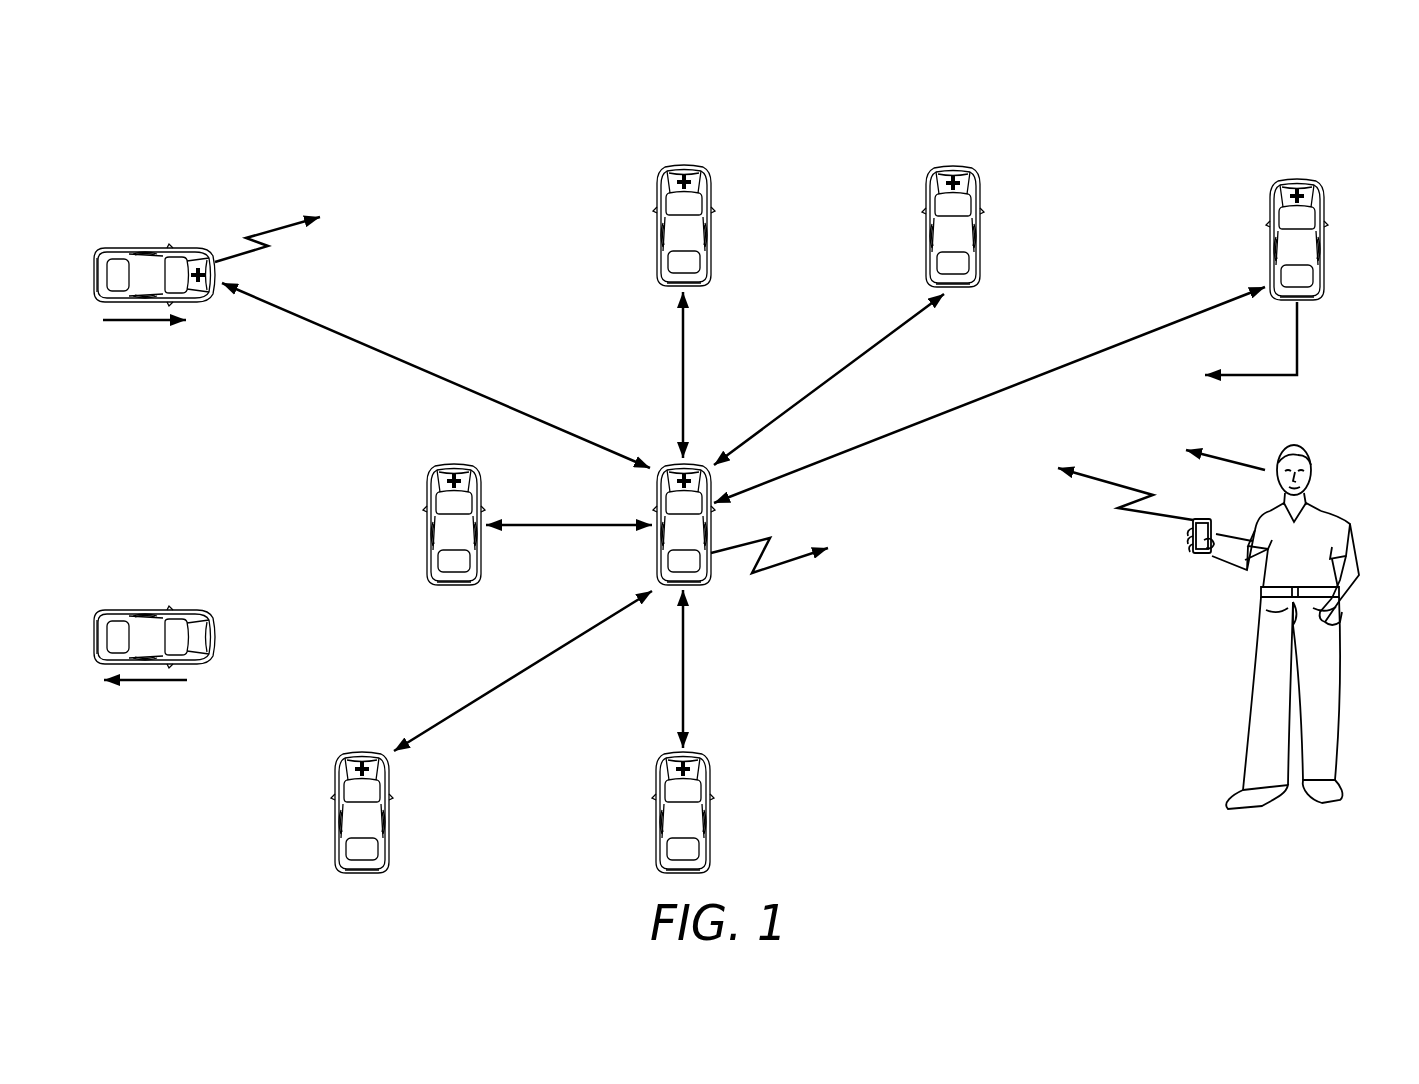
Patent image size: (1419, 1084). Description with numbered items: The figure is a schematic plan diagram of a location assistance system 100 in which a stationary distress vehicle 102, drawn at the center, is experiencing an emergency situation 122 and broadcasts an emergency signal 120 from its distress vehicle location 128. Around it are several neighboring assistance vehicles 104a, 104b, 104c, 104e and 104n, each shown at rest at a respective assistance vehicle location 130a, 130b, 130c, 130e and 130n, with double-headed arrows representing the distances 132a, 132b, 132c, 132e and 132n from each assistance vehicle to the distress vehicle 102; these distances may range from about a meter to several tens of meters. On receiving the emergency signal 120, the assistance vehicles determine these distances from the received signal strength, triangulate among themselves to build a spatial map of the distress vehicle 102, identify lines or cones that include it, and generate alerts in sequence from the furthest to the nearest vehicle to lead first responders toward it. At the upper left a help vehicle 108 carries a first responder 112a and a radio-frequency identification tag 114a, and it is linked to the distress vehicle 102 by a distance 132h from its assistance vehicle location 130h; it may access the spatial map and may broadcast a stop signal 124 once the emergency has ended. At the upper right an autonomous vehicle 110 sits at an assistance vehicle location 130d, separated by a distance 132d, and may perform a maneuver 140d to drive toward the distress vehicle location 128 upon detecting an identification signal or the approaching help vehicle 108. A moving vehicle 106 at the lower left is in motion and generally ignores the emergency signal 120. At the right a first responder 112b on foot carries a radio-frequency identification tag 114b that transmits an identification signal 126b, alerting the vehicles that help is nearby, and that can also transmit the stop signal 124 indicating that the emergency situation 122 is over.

The location assistance system 100 is at (338, 118).
The distress vehicle 102 is at (628, 500).
The assistance vehicle 104a is at (409, 500).
The assistance vehicle 104b is at (650, 203).
The assistance vehicle 104c is at (920, 204).
The assistance vehicle 104e is at (316, 788).
The assistance vehicle 104n is at (651, 788).
The moving vehicle 106 is at (178, 606).
The help vehicle 108 is at (189, 273).
The autonomous vehicle 110 is at (1272, 254).
The first responder 112a is at (188, 252).
The first responder 112b is at (1334, 503).
The radio-frequency identification tag 114a is at (175, 248).
The radio-frequency identification tag 114b is at (1193, 553).
The emergency signal 120 is at (793, 561).
The emergency situation 122 is at (654, 500).
The stop signal 124 is at (740, 352).
The identification signal 126b is at (443, 214).
The distress vehicle location 128 is at (687, 478).
The assistance vehicle location 130a is at (428, 452).
The assistance vehicle location 130b is at (689, 182).
The assistance vehicle location 130c is at (958, 183).
The assistance vehicle location 130d is at (1302, 196).
The assistance vehicle location 130e is at (336, 739).
The assistance vehicle location 130h is at (201, 281).
The assistance vehicle location 130n is at (690, 767).
The distance 132a is at (567, 528).
The distance 132b is at (680, 360).
The distance 132c is at (850, 362).
The distance 132d is at (1096, 352).
The distance 132e is at (533, 666).
The distance 132h is at (440, 378).
The distance 132n is at (686, 680).
The lane change maneuver 140d is at (1239, 254).